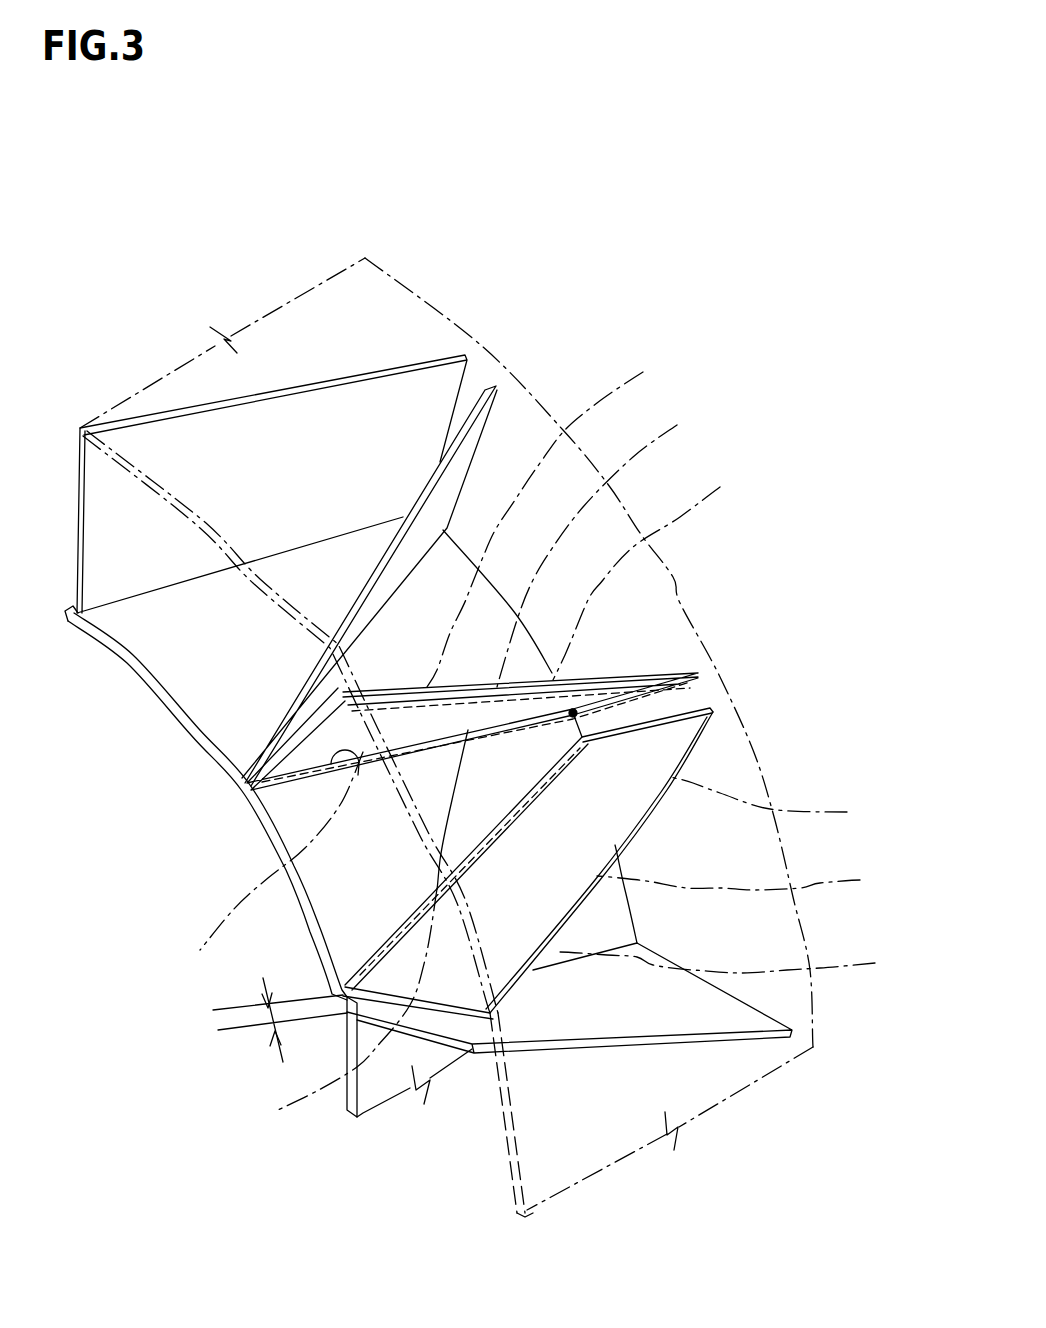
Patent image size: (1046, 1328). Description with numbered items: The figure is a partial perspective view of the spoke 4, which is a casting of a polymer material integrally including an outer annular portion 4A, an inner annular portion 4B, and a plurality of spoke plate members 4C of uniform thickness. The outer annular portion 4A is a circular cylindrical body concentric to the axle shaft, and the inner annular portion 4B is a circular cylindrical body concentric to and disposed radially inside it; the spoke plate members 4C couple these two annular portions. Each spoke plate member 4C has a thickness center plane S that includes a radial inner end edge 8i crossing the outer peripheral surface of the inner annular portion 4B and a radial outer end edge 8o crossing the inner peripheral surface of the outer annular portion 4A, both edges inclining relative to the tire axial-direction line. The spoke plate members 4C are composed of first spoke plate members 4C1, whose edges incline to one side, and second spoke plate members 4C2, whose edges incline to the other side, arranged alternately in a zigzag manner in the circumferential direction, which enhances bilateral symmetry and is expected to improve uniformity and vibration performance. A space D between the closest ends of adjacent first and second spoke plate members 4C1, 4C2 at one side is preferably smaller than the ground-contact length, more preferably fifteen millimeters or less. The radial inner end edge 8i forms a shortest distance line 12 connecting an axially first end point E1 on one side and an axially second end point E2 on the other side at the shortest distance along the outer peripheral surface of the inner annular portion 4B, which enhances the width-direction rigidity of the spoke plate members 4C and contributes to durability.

The spoke 4 is at (504, 306).
The outer annular portion 4A is at (138, 473).
The inner annular portion 4B is at (163, 693).
The spoke plate members 4C is at (143, 527).
The first spoke plate members 4C1 is at (633, 670).
The second spoke plate members 4C2 is at (693, 745).
The radial outer end edge 8o is at (581, 760).
The radial inner end edge 8i is at (724, 682).
The thickness center plane S is at (552, 663).
The axially first end point E1 is at (247, 783).
The axially second end point E2 is at (573, 713).
The shortest distance line 12 is at (477, 1036).
The space D is at (280, 1020).